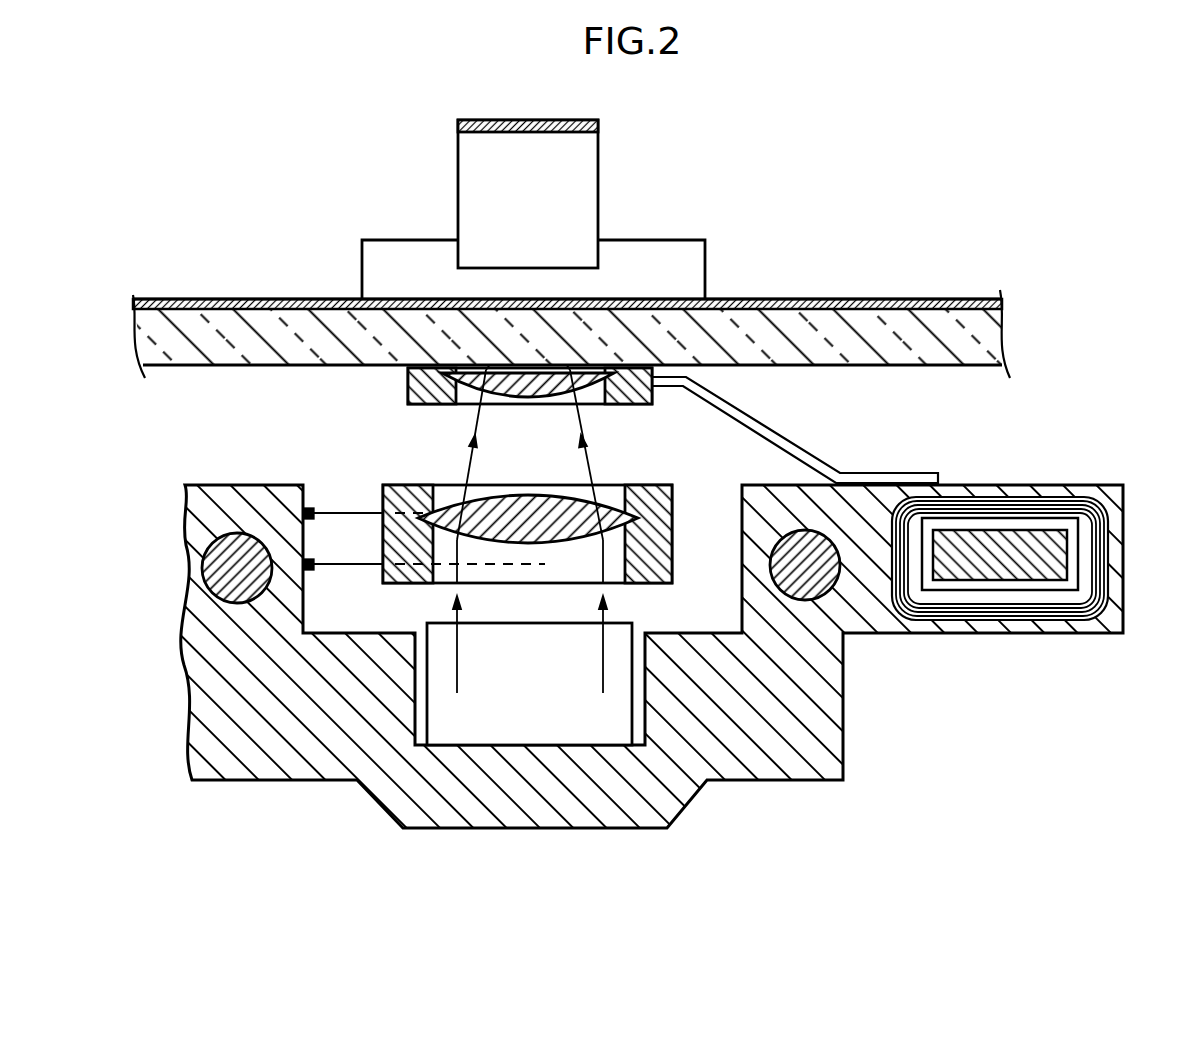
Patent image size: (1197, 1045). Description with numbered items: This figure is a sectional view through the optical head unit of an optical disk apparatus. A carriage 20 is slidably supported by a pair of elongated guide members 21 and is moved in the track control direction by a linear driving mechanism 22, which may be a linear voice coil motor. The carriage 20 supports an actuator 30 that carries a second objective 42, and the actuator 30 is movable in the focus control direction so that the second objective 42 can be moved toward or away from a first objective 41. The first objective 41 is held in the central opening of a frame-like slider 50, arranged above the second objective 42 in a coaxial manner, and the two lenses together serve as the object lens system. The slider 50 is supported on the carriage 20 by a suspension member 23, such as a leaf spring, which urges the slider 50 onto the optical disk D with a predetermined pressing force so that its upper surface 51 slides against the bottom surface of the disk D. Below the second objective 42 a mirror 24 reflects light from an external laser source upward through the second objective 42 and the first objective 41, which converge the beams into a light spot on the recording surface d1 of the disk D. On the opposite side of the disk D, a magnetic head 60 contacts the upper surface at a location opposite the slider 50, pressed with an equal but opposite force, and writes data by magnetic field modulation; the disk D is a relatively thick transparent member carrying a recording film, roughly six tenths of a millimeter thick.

The carriage 20 is at (1005, 468).
The guide members 21 is at (240, 545).
The linear driving mechanism 22 is at (1085, 537).
The suspension member 23 is at (780, 433).
The mirror 24 is at (602, 727).
The actuator 30 is at (647, 483).
The first objective 41 is at (455, 385).
The second objective 42 is at (550, 512).
The slider 50 is at (408, 397).
The upper surface of the slider 51 is at (436, 376).
The magnetic head 60 is at (670, 248).
The optical disk D is at (870, 293).
The recording surface d1 is at (242, 310).